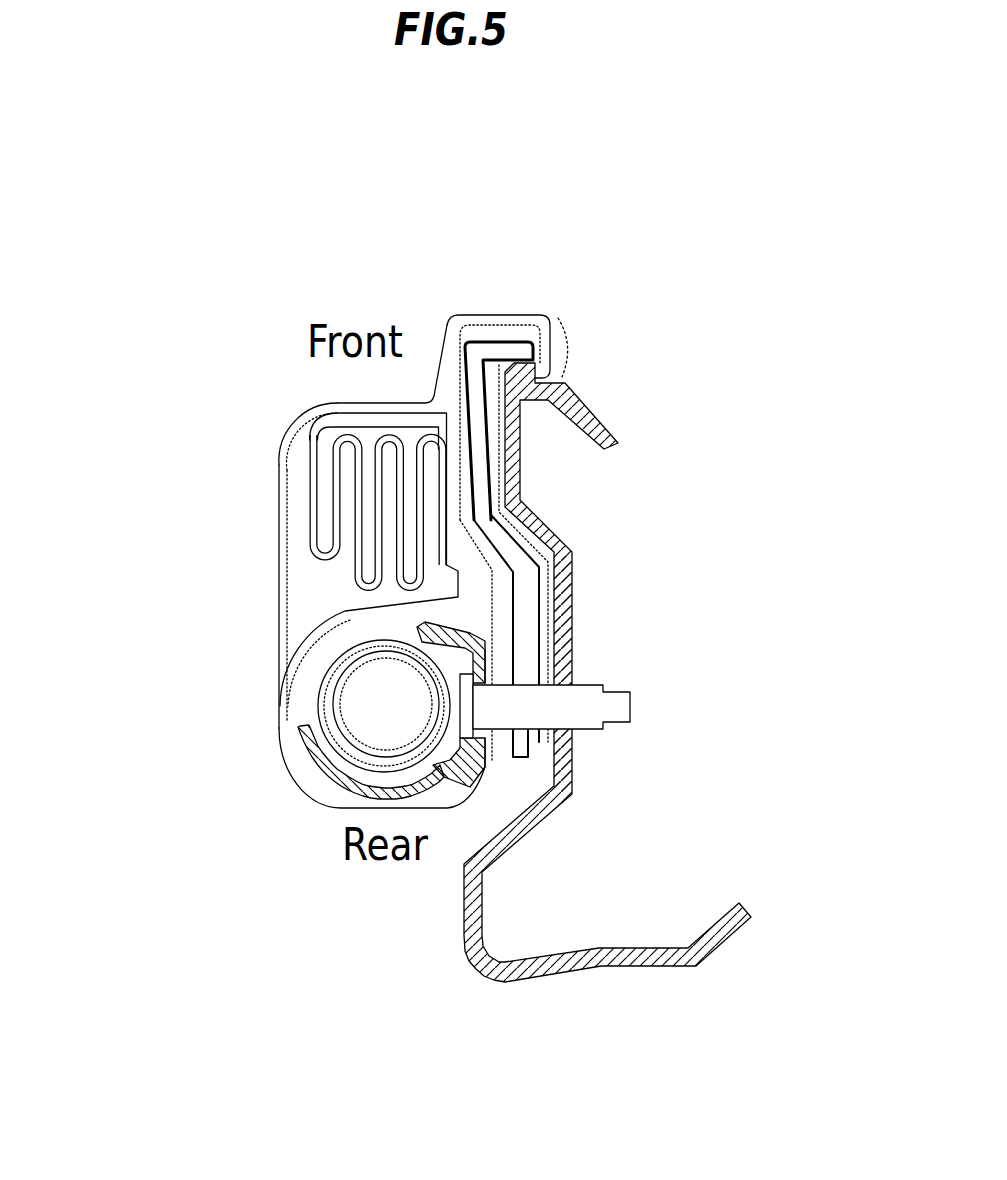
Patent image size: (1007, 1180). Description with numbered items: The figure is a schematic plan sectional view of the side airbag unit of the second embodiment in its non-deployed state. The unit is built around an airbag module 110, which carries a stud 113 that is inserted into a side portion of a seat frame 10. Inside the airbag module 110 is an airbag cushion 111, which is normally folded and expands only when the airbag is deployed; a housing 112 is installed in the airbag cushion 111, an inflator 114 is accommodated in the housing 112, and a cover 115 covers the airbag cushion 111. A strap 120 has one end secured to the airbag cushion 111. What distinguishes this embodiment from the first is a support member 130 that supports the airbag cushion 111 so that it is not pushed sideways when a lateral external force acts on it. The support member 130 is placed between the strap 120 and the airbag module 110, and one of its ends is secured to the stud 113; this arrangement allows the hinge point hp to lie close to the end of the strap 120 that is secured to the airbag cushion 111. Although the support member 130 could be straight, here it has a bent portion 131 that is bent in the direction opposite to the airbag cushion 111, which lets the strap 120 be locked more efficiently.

The seat frame 10 is at (462, 922).
The airbag module 110 is at (258, 476).
The airbag cushion 111 is at (326, 414).
The housing 112 is at (304, 778).
The stud 113 is at (628, 707).
The inflator 114 is at (318, 692).
The cover 115 is at (278, 571).
The strap 120 is at (542, 310).
The support member 130 is at (574, 604).
The bent portion 131 is at (478, 334).
The hinge point hp is at (567, 331).